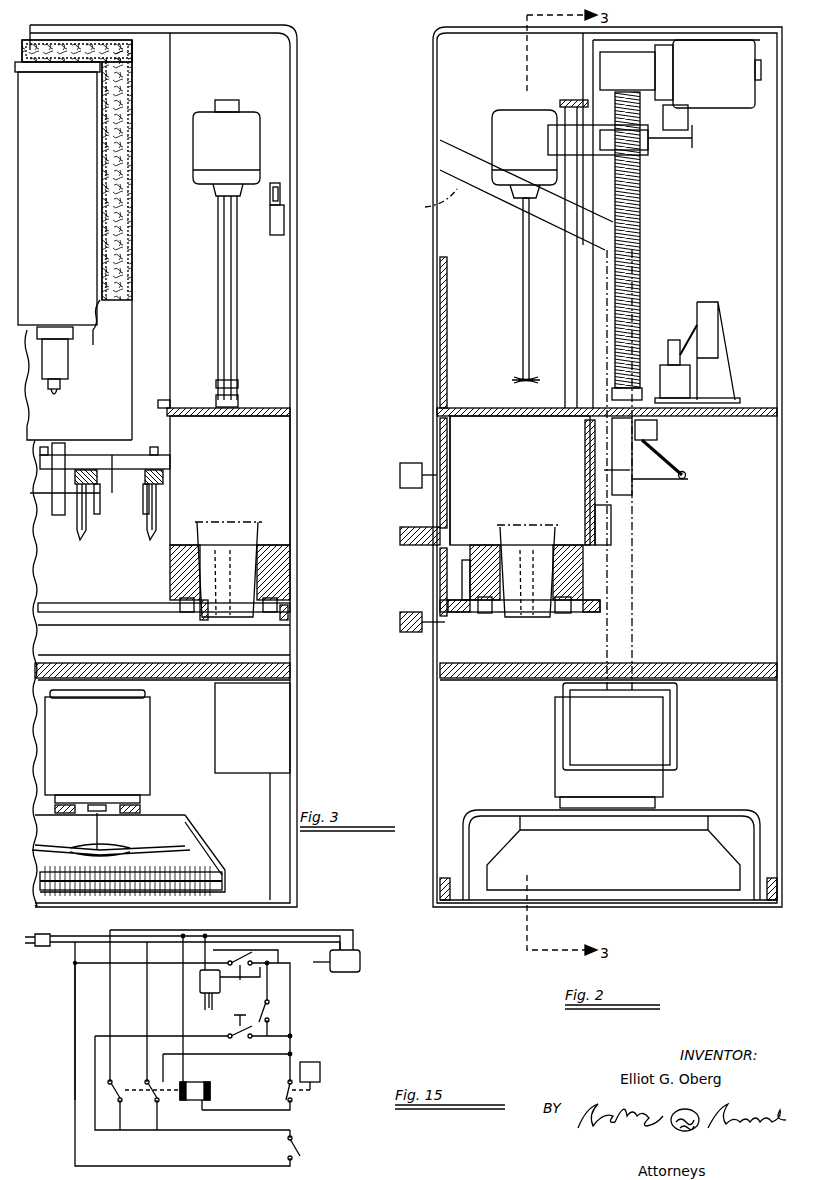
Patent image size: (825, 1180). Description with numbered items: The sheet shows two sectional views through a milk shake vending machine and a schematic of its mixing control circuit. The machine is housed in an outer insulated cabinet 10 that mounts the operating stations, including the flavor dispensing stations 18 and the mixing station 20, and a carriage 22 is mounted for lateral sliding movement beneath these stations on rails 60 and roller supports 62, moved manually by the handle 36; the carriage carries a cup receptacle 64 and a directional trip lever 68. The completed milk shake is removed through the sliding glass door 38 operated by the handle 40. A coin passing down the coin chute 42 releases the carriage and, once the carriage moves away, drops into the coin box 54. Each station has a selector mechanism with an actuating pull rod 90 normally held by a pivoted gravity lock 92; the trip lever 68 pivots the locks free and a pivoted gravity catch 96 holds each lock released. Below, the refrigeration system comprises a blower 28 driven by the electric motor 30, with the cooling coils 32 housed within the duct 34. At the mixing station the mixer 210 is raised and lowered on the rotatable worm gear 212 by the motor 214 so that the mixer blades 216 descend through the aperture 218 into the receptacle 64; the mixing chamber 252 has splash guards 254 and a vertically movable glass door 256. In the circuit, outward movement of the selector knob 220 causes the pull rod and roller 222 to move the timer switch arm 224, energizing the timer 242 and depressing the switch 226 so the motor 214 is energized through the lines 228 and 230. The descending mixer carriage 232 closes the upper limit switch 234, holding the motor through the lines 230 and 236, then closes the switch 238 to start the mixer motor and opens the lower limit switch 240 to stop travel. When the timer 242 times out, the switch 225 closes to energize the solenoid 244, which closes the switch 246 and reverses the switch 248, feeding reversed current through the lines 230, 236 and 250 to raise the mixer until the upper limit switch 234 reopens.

In FIG. 3, the outer insulated cabinet 10 is at (297, 122).
In FIG. 2, the outer insulated cabinet 10 is at (437, 120).
In FIG. 3, the flavor dispensing stations 18 is at (62, 66).
In FIG. 3, the mixing station 20 is at (200, 16).
In FIG. 2, the mixing station 20 is at (480, 16).
In FIG. 3, the carriage 22 is at (262, 508).
In FIG. 2, the carriage 22 is at (490, 508).
In FIG. 3, the blower 28 is at (166, 842).
In FIG. 3, the electric motor 30 is at (151, 747).
In FIG. 2, the electric motor 30 is at (554, 742).
In FIG. 3, the cooling coils 32 is at (218, 872).
In FIG. 3, the duct 34 is at (210, 848).
In FIG. 2, the duct 34 is at (620, 863).
In FIG. 2, the handle 36 is at (415, 634).
In FIG. 2, the sliding glass door 38 is at (437, 434).
In FIG. 2, the handle 40 is at (398, 540).
In FIG. 3, the coin chute 42 is at (283, 203).
In FIG. 2, the coin chute 42 is at (666, 543).
In FIG. 3, the coin box 54 is at (221, 762).
In FIG. 2, the coin box 54 is at (680, 734).
In FIG. 3, the rails 60 is at (124, 604).
In FIG. 2, the rails 60 is at (470, 612).
In FIG. 2, the roller supports 62 is at (546, 623).
In FIG. 3, the cup receptacle 64 is at (208, 562).
In FIG. 2, the cup receptacle 64 is at (720, 81).
In FIG. 2, the directional trip lever 68 is at (535, 156).
In FIG. 2, the actuating pull rod 90 is at (686, 478).
In FIG. 3, the pivoted gravity lock 92 is at (42, 540).
In FIG. 3, the pivoted gravity catch 96 is at (143, 521).
In FIG. 3, the mixer 210 is at (211, 173).
In FIG. 2, the mixer 210 is at (492, 140).
In FIG. 15, the mixer 210 is at (212, 996).
In FIG. 2, the rotatable worm gear 212 is at (643, 222).
In FIG. 2, the motor 214 is at (720, 100).
In FIG. 15, the motor 214 is at (350, 974).
In FIG. 3, the mixer blades 216 is at (240, 376).
In FIG. 2, the mixer blades 216 is at (511, 378).
In FIG. 2, the aperture 218 is at (532, 418).
In FIG. 2, the selector knob 220 is at (398, 478).
In FIG. 2, the pull rod and roller 222 is at (688, 472).
In FIG. 15, the pull rod and roller 222 is at (318, 1091).
In FIG. 2, the timer switch arm 224 is at (662, 460).
In FIG. 15, the switch 225 is at (286, 1090).
In FIG. 2, the switch 226 is at (635, 492).
In FIG. 15, the switch 226 is at (302, 1146).
In FIG. 15, the line 228 is at (75, 1019).
In FIG. 15, the line 230 is at (300, 936).
In FIG. 2, the mixer carriage 232 is at (653, 150).
In FIG. 15, the mixer carriage 232 is at (240, 982).
In FIG. 2, the upper limit switch 234 is at (700, 115).
In FIG. 15, the upper limit switch 234 is at (245, 950).
In FIG. 15, the line 236 is at (157, 1023).
In FIG. 2, the switch 238 is at (697, 330).
In FIG. 15, the switch 238 is at (279, 1011).
In FIG. 2, the lower limit switch 240 is at (670, 342).
In FIG. 15, the lower limit switch 240 is at (242, 1040).
In FIG. 2, the timer 242 is at (658, 428).
In FIG. 15, the timer 242 is at (312, 1062).
In FIG. 15, the solenoid 244 is at (196, 1082).
In FIG. 15, the switch 246 is at (153, 1101).
In FIG. 15, the switch 248 is at (115, 1101).
In FIG. 15, the line 250 is at (122, 1021).
In FIG. 2, the mixing chamber 252 is at (462, 490).
In FIG. 3, the splash guards 254 is at (244, 466).
In FIG. 2, the splash guards 254 is at (579, 460).
In FIG. 2, the vertically movable glass door 256 is at (450, 461).